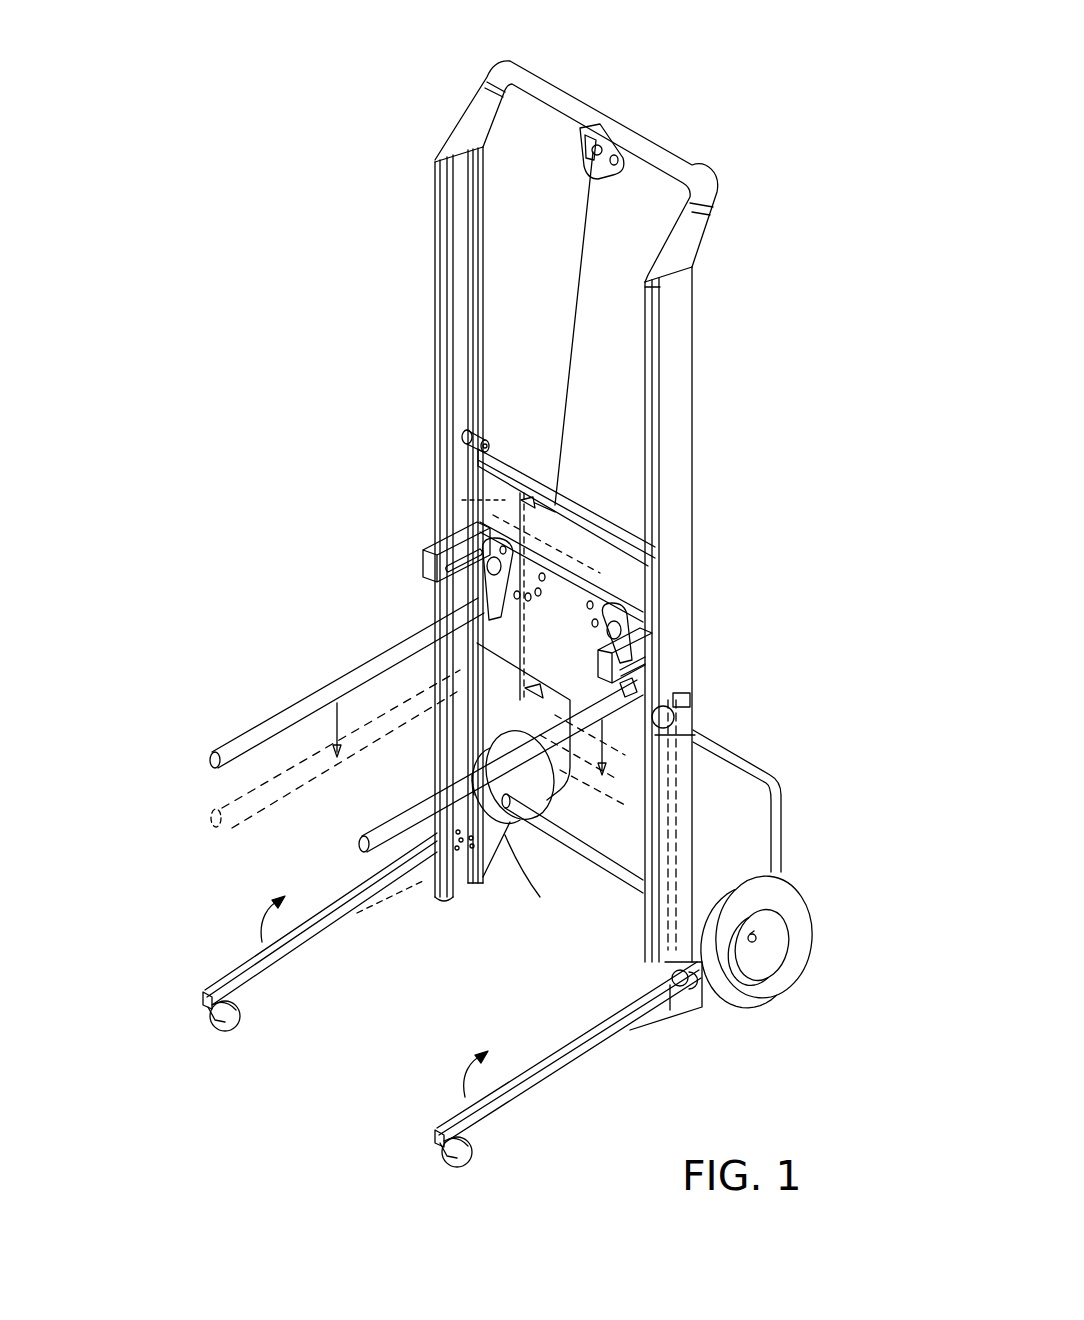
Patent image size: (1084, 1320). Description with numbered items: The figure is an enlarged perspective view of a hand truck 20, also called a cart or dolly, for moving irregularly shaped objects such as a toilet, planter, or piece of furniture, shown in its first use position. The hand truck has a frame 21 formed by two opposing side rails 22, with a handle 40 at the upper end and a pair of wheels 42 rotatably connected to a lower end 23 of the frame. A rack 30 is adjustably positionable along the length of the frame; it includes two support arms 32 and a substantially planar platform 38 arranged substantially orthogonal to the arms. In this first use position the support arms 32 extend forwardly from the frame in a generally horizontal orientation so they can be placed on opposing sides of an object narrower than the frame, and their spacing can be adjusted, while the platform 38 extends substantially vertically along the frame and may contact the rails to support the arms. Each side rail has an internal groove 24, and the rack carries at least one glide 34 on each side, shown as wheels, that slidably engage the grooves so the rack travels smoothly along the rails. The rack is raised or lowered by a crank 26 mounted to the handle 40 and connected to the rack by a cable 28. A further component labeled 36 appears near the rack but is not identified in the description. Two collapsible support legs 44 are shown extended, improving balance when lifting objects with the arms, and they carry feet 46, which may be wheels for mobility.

The hand truck 20 is at (310, 92).
The frame 21 is at (732, 338).
The side rails 22 is at (480, 362).
The lower end 23 is at (703, 1032).
The internal groove 24 is at (462, 240).
The crank 26 is at (583, 180).
The cable 28 is at (568, 414).
The rack 30 is at (352, 613).
The support arms 32 is at (282, 708).
The glide 34 is at (468, 430).
The bracket 36 is at (428, 548).
The platform 38 is at (576, 667).
The handle 40 is at (660, 145).
The wheels 42 is at (497, 845).
The support legs 44 is at (343, 917).
The feet 46 is at (214, 1022).